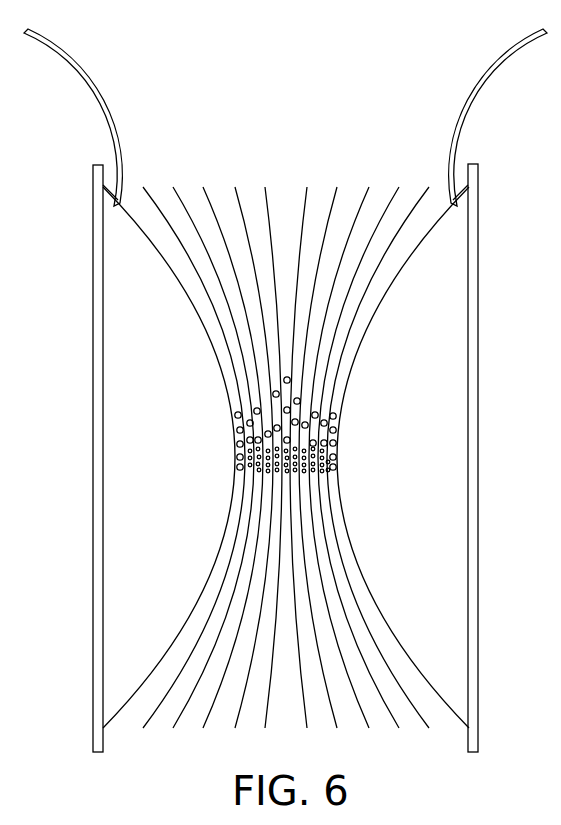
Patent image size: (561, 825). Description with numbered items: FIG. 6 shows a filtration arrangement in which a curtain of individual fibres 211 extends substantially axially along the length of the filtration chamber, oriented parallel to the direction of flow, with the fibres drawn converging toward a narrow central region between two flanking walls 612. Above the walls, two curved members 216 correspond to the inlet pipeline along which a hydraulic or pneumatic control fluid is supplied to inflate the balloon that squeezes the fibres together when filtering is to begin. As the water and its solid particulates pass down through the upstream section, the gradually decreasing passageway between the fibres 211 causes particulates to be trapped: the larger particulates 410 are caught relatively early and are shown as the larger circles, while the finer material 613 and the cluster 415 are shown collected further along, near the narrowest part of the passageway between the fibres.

The inlet pipeline 216 is at (100, 88).
The electrode plates 612 is at (112, 348).
The larger particulates 410 is at (336, 416).
The agglomerated small particles 613 is at (258, 474).
The particle cluster 415 is at (337, 474).
The fibres 211 is at (297, 632).